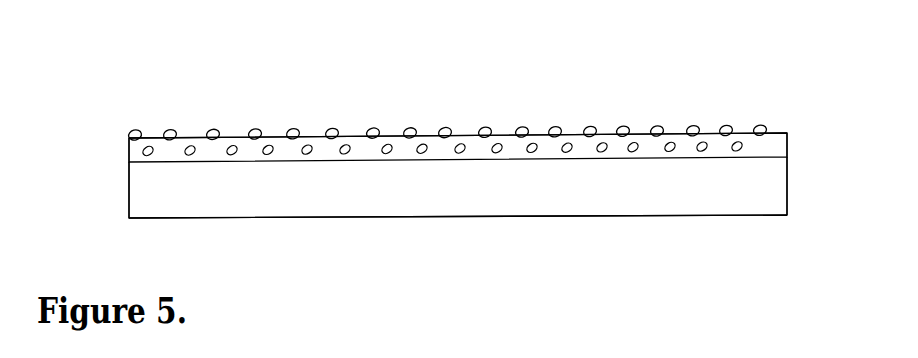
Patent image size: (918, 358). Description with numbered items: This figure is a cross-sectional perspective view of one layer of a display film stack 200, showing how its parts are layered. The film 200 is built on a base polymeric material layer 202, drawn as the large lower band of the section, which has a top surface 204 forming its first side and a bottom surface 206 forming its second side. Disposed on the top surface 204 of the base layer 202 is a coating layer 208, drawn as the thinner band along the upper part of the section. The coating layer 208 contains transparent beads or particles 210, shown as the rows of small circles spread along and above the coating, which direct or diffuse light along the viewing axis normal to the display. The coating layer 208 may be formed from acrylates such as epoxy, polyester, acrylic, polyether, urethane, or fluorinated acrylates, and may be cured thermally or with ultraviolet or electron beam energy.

The display film stack 200 is at (671, 61).
The base polymeric material layer 202 is at (143, 197).
The top surface 204 is at (134, 156).
The bottom surface 206 is at (671, 219).
The coating layer 208 is at (804, 143).
The transparent beads or particles 210 is at (332, 128).